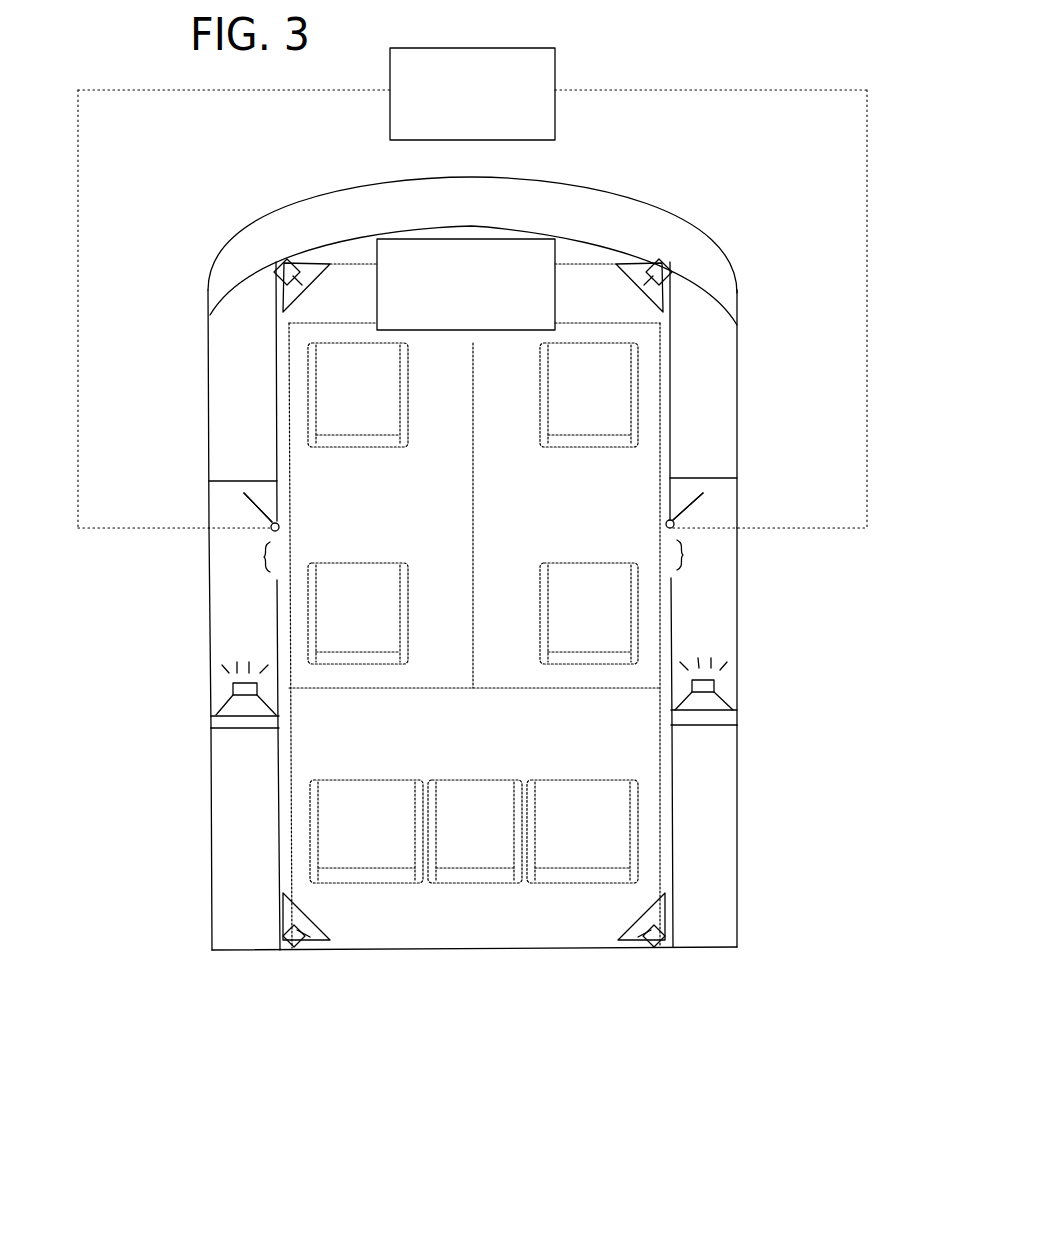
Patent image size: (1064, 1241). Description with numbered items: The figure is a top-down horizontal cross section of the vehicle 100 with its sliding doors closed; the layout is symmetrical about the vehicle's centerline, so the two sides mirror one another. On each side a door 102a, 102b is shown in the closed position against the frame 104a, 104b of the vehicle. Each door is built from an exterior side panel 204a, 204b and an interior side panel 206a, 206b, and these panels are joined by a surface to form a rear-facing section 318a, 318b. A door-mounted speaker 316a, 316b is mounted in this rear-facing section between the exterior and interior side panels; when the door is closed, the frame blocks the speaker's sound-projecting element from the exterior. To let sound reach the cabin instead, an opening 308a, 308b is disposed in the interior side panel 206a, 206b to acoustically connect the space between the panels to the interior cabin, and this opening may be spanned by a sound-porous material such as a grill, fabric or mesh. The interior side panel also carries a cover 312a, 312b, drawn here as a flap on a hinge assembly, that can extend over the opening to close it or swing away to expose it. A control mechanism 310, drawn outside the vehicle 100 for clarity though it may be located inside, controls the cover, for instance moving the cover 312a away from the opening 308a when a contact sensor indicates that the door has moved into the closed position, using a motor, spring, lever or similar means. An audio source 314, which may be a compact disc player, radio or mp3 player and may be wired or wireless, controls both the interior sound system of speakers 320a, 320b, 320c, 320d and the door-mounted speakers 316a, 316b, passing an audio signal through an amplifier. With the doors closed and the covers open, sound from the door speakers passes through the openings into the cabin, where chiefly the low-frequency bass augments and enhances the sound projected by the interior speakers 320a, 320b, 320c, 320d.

The vehicle 100 is at (471, 1022).
The door 102a is at (718, 492).
The door 102b is at (225, 503).
The frame 104a is at (713, 868).
The frame 104b is at (230, 867).
The exterior side panel 204a is at (740, 622).
The exterior side panel 204b is at (208, 657).
The interior side panel 206a is at (672, 662).
The interior side panel 206b is at (278, 668).
The opening 308a is at (686, 555).
The opening 308b is at (265, 557).
The control mechanism 310 is at (472, 288).
The cover 312a is at (695, 510).
The cover 312b is at (253, 508).
The audio source 314 is at (466, 284).
The speaker 316a is at (715, 683).
The speaker 316b is at (236, 708).
The rear-facing section 318a is at (717, 718).
The rear-facing section 318b is at (232, 722).
The interior speaker 320a is at (660, 283).
The interior speaker 320b is at (287, 262).
The interior speaker 320c is at (318, 940).
The interior speaker 320d is at (653, 922).